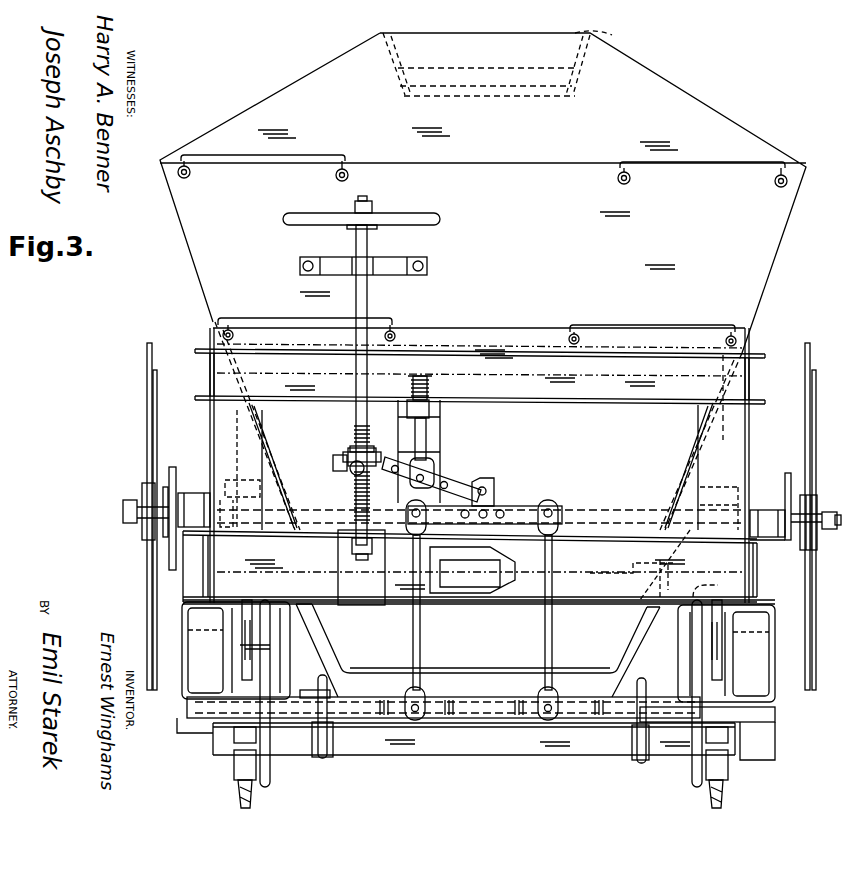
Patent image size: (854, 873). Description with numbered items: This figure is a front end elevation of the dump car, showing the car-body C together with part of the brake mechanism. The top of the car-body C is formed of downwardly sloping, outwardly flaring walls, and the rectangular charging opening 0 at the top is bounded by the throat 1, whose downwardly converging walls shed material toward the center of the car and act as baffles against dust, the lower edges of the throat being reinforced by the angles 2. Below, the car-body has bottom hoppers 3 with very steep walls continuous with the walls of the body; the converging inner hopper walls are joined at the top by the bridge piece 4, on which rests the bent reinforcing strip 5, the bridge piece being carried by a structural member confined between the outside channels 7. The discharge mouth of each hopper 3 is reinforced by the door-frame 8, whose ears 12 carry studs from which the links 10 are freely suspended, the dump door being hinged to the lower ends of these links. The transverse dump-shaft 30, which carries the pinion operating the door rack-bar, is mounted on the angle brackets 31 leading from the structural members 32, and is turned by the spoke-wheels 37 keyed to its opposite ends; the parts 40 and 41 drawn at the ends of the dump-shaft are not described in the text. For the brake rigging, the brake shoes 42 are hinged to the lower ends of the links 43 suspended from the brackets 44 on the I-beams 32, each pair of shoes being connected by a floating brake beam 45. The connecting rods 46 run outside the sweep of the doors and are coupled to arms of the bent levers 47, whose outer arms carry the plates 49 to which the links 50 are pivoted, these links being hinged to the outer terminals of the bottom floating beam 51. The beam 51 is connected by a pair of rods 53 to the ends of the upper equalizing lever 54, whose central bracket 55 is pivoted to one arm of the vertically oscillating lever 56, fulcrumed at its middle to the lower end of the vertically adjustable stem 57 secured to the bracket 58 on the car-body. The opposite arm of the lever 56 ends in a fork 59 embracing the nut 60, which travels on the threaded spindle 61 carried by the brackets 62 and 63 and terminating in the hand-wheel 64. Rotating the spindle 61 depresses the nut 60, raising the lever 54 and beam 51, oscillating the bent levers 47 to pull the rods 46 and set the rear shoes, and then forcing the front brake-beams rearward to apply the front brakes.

The car-body C is at (747, 142).
The charging opening 0 is at (507, 61).
The throat 1 is at (577, 68).
The angles 2 is at (575, 95).
The bottom hoppers 3 is at (592, 657).
The bridge piece 4 is at (572, 372).
The bent reinforcing strip 5 is at (505, 335).
The outside channels 7 is at (210, 372).
The door-frame 8 is at (437, 733).
The links 10 is at (290, 628).
The ears 12 is at (655, 575).
The dump-shaft 30 is at (190, 512).
The angle brackets 31 is at (178, 478).
The structural members 32 is at (208, 572).
The spoke-wheels 37 is at (155, 440).
The axle nut 40 is at (142, 498).
The washer 41 is at (165, 540).
The brake shoes 42 is at (722, 727).
The links 43 is at (715, 655).
The brackets 44 is at (700, 600).
The floating brake beam 45 is at (647, 698).
The connecting rods 46 is at (318, 762).
The bent levers 47 is at (320, 690).
The brackets or plates 49 is at (310, 738).
The links 50 is at (332, 742).
The bottom floating beam 51 is at (490, 707).
The rods 53 is at (420, 656).
The upper equalizing lever 54 is at (530, 515).
The central bracket 55 is at (494, 482).
The vertically oscillating lever 56 is at (458, 482).
The vertically adjustable stem 57 is at (427, 446).
The bracket 58 is at (437, 412).
The fork 59 is at (340, 464).
The nut 60 is at (345, 455).
The spindle 61 is at (356, 386).
The bracket 62 is at (352, 538).
The bracket 63 is at (380, 262).
The hand-wheel 64 is at (440, 218).